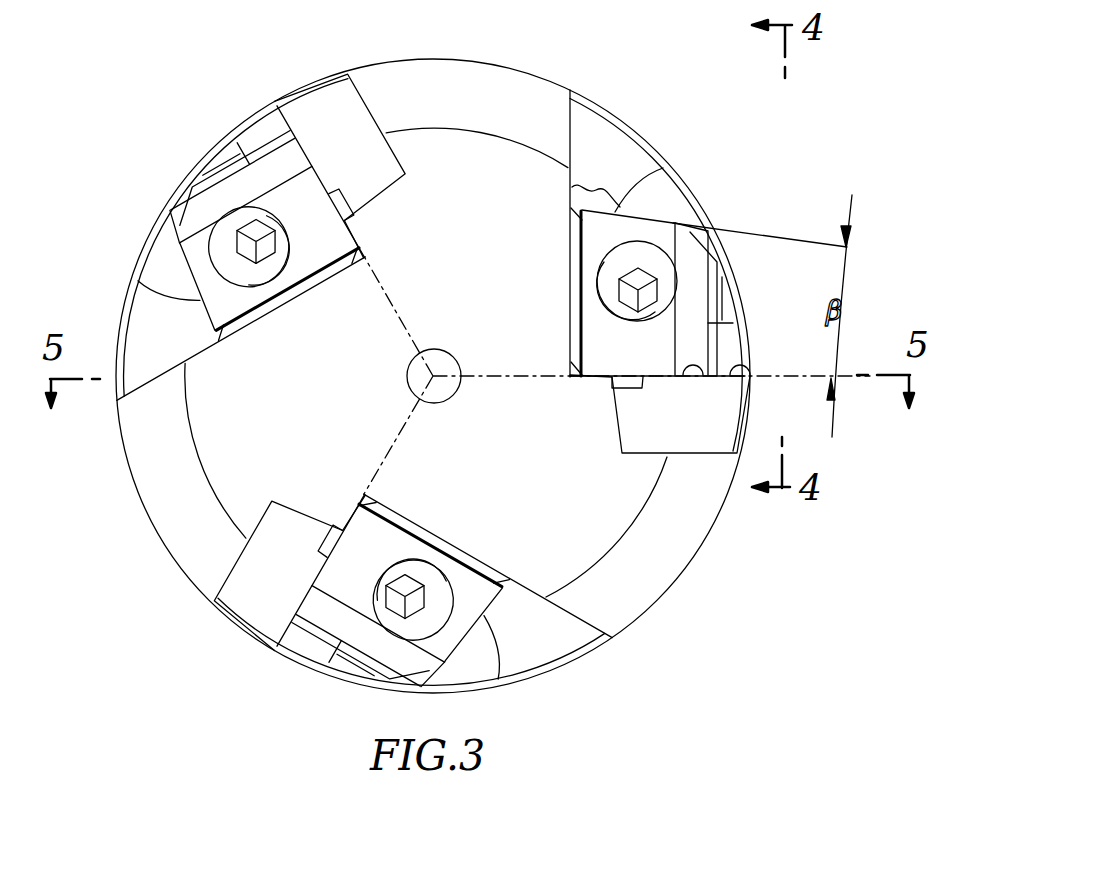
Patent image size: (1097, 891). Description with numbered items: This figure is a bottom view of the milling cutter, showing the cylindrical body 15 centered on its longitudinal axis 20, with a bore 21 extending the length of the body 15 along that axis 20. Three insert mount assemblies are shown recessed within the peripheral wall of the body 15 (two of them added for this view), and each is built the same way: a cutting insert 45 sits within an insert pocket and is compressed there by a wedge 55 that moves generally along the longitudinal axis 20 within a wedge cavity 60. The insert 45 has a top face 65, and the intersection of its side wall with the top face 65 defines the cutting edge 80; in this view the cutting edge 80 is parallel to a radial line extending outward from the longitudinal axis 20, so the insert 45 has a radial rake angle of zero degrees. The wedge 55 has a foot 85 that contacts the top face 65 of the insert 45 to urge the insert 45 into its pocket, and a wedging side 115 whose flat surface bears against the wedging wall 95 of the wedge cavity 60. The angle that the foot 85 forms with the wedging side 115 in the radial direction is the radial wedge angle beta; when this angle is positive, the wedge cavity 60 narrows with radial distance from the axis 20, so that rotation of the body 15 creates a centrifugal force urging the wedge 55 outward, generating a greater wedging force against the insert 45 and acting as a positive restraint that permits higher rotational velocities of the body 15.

The cylindrical body 15 is at (177, 190).
The longitudinal axis 20 is at (427, 376).
The bore 21 is at (453, 395).
The cutting insert 45 is at (713, 437).
The wedge 55 is at (645, 228).
The wedge cavity 60 is at (728, 335).
The top face 65 is at (737, 366).
The cutting edge 80 is at (683, 377).
The foot 85 is at (640, 390).
The wedging wall 95 is at (579, 229).
The wedging side 115 is at (574, 189).